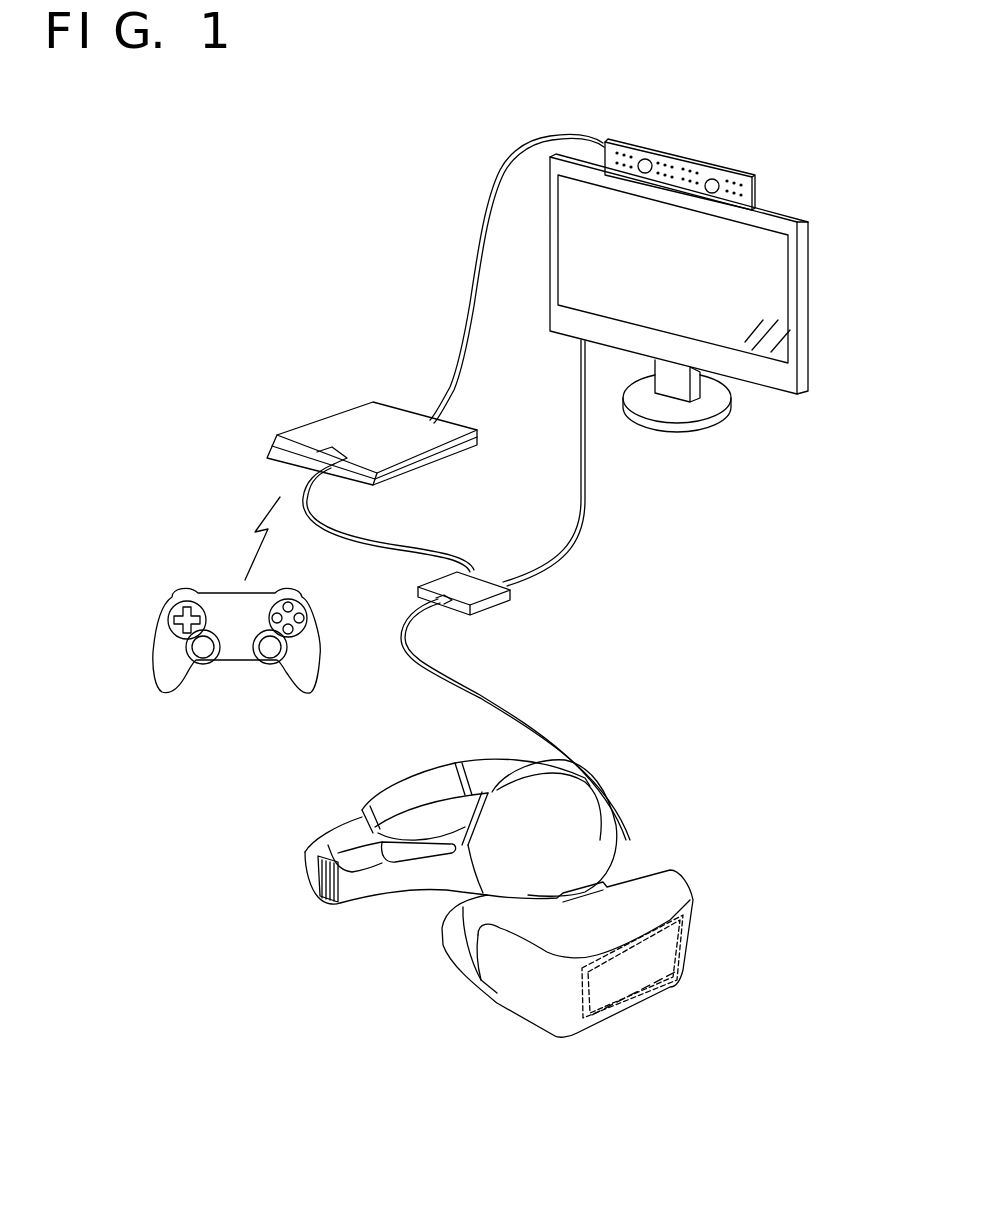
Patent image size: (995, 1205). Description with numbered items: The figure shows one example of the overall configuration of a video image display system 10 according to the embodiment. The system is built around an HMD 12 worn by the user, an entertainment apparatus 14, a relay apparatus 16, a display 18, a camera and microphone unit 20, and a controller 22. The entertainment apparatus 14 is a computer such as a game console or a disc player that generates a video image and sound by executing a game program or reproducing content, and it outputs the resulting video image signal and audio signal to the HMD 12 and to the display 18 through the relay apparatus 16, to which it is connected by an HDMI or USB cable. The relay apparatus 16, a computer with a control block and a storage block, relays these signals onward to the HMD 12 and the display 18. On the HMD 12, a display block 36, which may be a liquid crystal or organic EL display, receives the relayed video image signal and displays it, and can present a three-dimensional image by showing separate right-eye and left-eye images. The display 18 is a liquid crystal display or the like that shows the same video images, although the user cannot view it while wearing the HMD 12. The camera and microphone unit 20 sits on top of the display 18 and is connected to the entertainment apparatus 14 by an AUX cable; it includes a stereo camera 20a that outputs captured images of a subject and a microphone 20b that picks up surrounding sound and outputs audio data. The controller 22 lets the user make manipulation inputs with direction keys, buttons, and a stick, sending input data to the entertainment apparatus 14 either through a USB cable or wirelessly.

The video image display system 10 is at (575, 927).
The HMD 12 is at (596, 982).
The entertainment apparatus 14 is at (318, 418).
The relay apparatus 16 is at (508, 585).
The display 18 is at (808, 303).
The camera and microphone unit 20 is at (705, 166).
The camera 20a is at (642, 182).
The microphone 20b is at (623, 145).
The controller 22 is at (325, 650).
The display block 36 is at (687, 930).